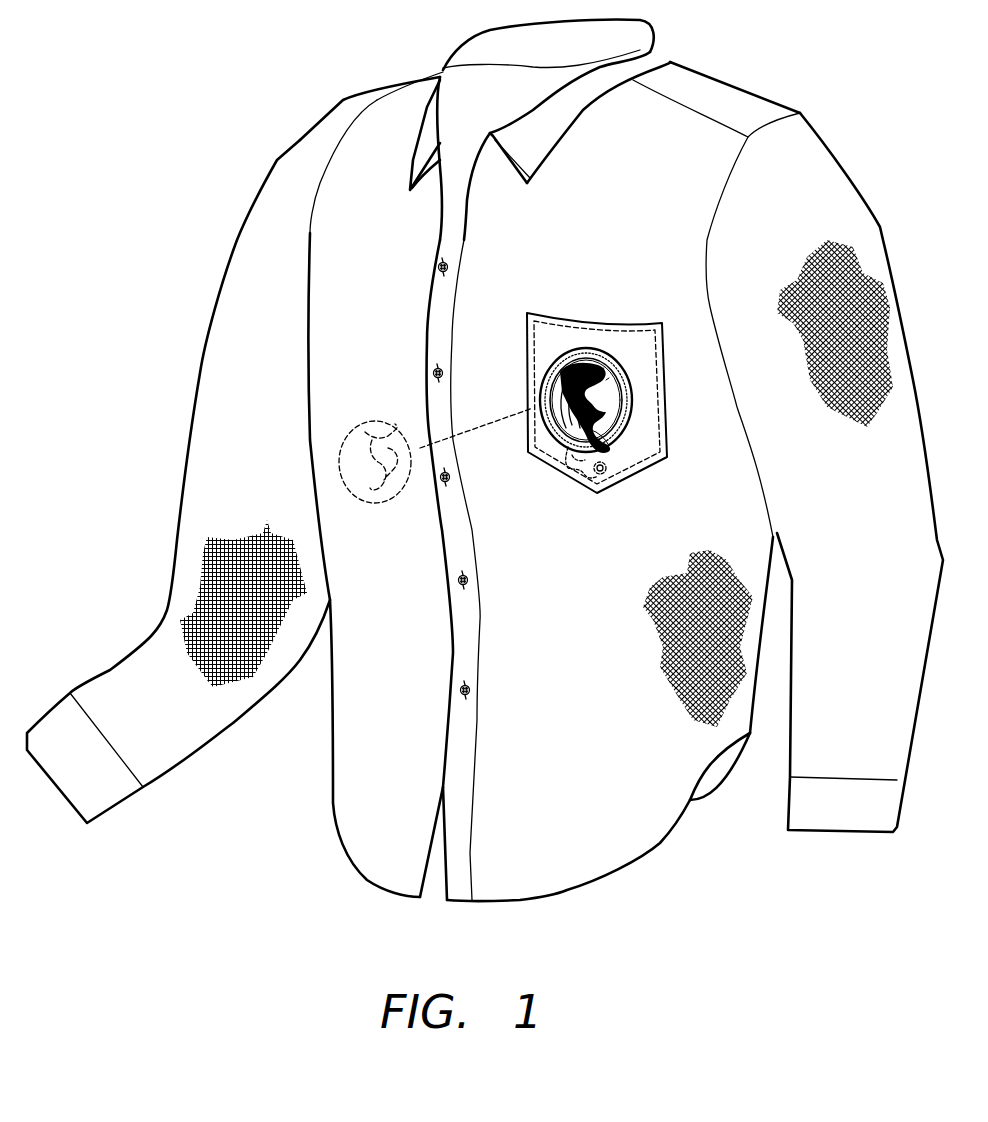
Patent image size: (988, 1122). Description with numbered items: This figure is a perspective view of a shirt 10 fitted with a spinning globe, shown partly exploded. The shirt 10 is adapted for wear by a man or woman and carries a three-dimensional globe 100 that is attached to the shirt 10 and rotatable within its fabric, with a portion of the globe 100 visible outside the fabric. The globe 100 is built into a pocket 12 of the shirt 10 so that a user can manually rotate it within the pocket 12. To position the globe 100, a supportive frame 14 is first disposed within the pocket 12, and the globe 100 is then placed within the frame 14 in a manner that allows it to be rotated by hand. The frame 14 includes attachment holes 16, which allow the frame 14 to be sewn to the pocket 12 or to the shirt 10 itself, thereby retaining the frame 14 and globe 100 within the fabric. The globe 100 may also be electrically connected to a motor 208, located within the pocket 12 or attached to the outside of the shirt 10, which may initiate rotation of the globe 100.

The shirt 10 is at (240, 125).
The pocket 12 is at (807, 163).
The supportive frame 14 is at (610, 360).
The attachment holes 16 is at (553, 367).
The three-dimensional globe 100 is at (610, 390).
The motor 208 is at (597, 493).